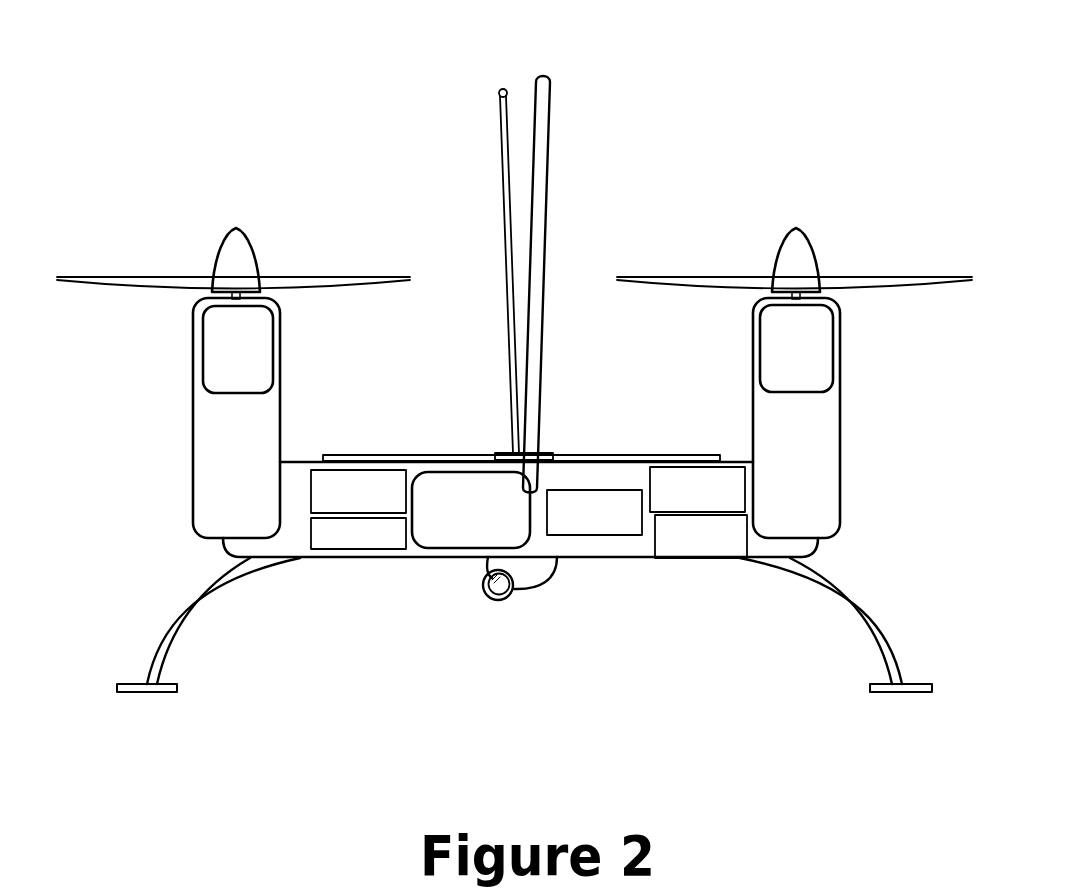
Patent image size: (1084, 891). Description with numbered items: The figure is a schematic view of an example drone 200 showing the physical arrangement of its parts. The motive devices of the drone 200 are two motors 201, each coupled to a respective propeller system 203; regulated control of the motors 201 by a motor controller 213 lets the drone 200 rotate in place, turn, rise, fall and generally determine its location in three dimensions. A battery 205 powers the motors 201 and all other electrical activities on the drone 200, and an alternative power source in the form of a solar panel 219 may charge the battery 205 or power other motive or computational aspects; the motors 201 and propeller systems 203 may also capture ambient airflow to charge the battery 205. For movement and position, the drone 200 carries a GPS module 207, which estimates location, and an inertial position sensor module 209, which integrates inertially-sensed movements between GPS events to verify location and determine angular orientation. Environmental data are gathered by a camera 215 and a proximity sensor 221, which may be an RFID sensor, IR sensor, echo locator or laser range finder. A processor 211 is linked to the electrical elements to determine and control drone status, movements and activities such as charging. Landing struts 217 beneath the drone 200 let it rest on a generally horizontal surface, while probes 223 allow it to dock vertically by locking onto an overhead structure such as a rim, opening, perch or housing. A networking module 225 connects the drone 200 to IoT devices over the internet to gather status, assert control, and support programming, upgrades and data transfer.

The drone 200 is at (376, 134).
The motors 201 is at (219, 360).
The propeller systems 203 is at (234, 229).
The battery 205 is at (471, 510).
The GPS module 207 is at (358, 491).
The inertial position sensor (IPS) module 209 is at (358, 534).
The processor 211 is at (697, 489).
The motor controller 213 is at (701, 536).
The camera 215 is at (481, 598).
The landing struts 217 is at (170, 627).
The solar panel 219 is at (686, 455).
The proximity sensor 221 is at (498, 452).
The probes 223 is at (543, 77).
The networking module 225 is at (594, 512).